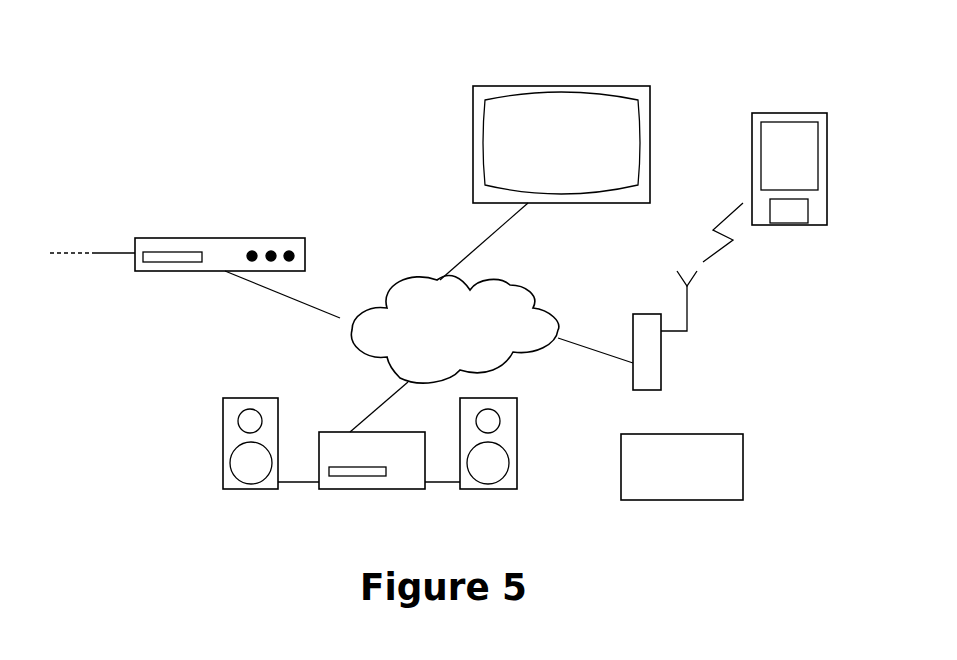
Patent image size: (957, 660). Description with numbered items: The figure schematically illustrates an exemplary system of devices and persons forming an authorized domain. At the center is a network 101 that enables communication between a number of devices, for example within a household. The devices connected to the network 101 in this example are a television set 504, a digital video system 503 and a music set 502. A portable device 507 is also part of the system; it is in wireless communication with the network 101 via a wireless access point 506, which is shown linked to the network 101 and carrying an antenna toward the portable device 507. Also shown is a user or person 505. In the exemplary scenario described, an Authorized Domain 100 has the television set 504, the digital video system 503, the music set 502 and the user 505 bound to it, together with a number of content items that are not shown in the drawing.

The Authorized Domain 100 is at (265, 53).
The network 101 is at (427, 277).
The music set 502 is at (403, 490).
The digital video system 503 is at (220, 237).
The television set 504 is at (613, 90).
The user 505 is at (657, 501).
The wireless access point 506 is at (652, 313).
The portable device 507 is at (808, 113).